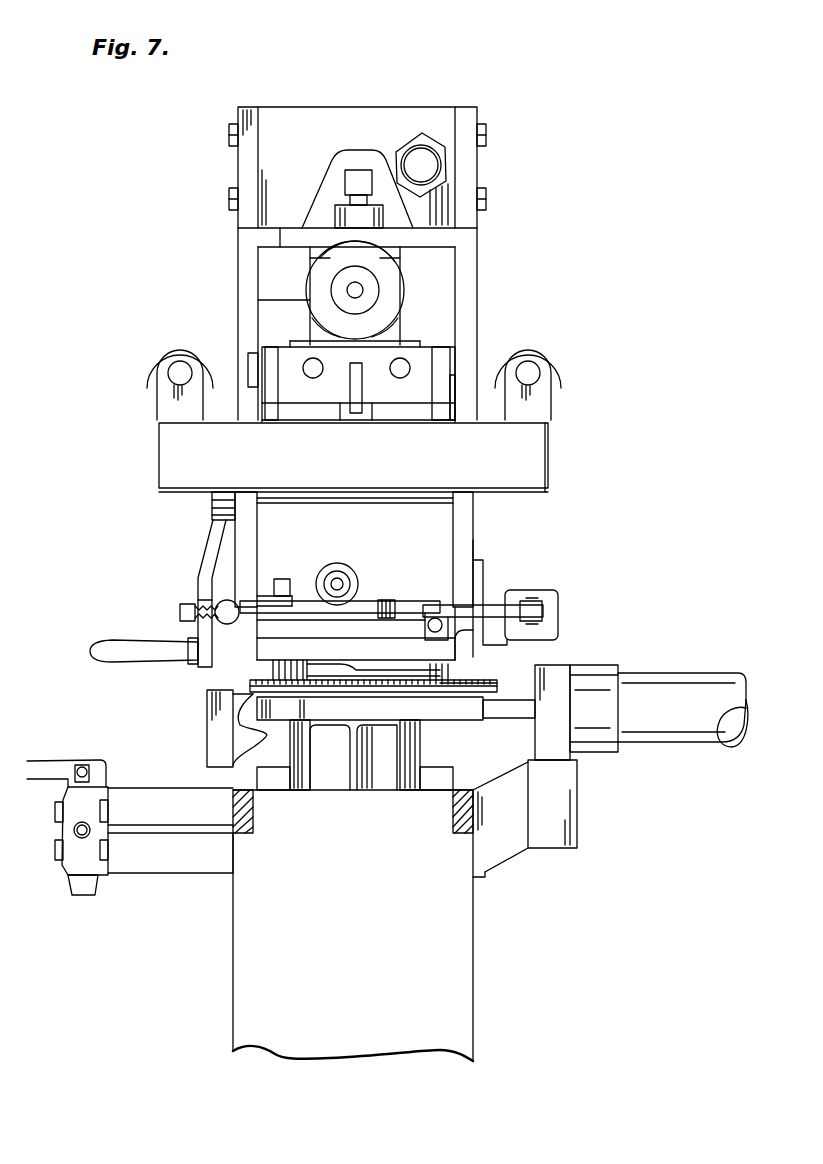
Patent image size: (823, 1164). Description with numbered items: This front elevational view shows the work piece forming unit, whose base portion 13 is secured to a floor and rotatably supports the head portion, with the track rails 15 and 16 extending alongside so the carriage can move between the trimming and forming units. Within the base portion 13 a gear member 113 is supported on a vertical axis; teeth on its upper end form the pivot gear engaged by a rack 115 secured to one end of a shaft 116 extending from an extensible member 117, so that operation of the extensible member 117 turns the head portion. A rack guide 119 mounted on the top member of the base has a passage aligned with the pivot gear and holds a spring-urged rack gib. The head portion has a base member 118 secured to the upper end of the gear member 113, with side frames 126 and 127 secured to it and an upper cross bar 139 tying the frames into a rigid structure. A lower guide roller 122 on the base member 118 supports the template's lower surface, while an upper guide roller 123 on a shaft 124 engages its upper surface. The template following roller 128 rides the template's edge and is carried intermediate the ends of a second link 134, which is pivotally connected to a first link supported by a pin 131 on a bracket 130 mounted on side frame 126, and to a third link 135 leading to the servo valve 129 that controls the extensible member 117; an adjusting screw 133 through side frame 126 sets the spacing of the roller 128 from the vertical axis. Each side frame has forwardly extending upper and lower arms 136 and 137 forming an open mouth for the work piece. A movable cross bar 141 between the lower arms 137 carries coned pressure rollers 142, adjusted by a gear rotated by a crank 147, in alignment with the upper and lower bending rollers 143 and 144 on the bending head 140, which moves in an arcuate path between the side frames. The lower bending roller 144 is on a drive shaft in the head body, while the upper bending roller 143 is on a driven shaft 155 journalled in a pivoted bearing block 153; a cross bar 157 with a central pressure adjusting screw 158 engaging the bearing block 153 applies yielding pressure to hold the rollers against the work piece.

The base portion 13 is at (535, 882).
The rail 15 is at (252, 833).
The rail 16 is at (450, 808).
The gear member 113 is at (268, 668).
The rack 115 is at (265, 733).
The shaft 116 is at (522, 700).
The extensible member 117 is at (683, 673).
The base member 118 is at (447, 670).
The rack guide 119 is at (337, 764).
The lower guide roller 122 is at (435, 618).
The upper guide roller 123 is at (352, 570).
The shaft 124 is at (325, 586).
The side frame 126 is at (225, 535).
The side frame 127 is at (475, 558).
The roller 128 is at (383, 604).
The servo valve 129 is at (557, 594).
The bracket 130 is at (356, 585).
The pin 131 is at (283, 579).
The adjusting screw 133 is at (178, 610).
The second link 134 is at (487, 596).
The third link 135 is at (545, 611).
The upper arm 136 is at (236, 165).
The lower arm 137 is at (220, 513).
The upper cross bar 139 is at (282, 115).
The bending head 140 is at (427, 327).
The movable cross bar 141 is at (400, 378).
The pressure rollers 142 is at (400, 340).
The upper bending roller 143 is at (406, 284).
The lower bending roller 144 is at (330, 340).
The crank 147 is at (212, 562).
The bearing block 153 is at (275, 327).
The driven shaft 155 is at (348, 290).
The cross bar 157 is at (392, 221).
The pressure adjusting screw 158 is at (358, 172).